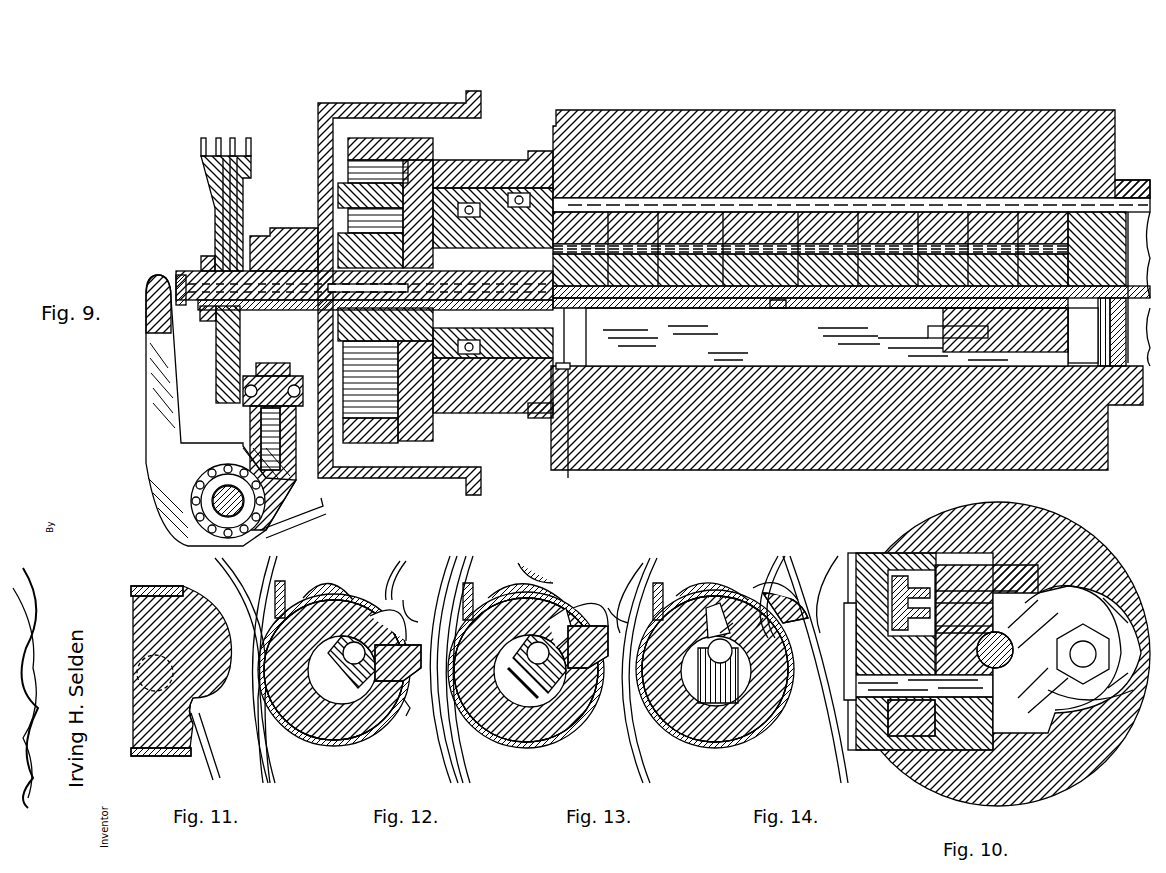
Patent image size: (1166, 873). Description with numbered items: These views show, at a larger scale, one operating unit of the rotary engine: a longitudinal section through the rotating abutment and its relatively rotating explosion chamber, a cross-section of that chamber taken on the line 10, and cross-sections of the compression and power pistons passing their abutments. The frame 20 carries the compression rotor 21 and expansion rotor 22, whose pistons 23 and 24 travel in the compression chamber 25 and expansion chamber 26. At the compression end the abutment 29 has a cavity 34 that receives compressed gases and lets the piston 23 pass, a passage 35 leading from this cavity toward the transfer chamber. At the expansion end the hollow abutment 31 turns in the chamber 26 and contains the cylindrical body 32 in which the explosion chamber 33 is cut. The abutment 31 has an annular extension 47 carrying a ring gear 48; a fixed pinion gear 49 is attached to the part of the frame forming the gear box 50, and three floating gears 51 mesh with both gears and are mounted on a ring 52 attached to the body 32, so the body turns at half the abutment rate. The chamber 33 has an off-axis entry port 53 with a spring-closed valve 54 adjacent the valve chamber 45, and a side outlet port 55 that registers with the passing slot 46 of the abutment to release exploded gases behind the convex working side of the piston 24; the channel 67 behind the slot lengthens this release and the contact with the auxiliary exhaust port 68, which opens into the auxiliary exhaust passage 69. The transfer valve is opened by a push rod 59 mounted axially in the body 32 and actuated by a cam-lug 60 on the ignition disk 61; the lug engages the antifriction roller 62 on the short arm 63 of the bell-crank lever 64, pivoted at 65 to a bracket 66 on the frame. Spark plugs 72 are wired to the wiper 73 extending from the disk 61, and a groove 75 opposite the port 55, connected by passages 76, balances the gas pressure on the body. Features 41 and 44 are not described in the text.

In FIG. 9, the section line 10 is at (878, 87).
In FIG. 10, the section line 10 is at (910, 495).
In FIG. 11, the frame 20 is at (165, 579).
In FIG. 12, the frame 20 is at (322, 733).
In FIG. 13, the frame 20 is at (545, 735).
In FIG. 14, the frame 20 is at (765, 770).
In FIG. 11, the compression rotor 21 is at (250, 574).
In FIG. 12, the expansion rotor 22 is at (448, 669).
In FIG. 13, the expansion rotor 22 is at (551, 669).
In FIG. 14, the expansion rotor 22 is at (830, 766).
In FIG. 11, the compression piston 23 is at (206, 700).
In FIG. 12, the power piston 24 is at (395, 635).
In FIG. 13, the power piston 24 is at (580, 620).
In FIG. 14, the power piston 24 is at (775, 580).
In FIG. 11, the compression chamber 25 is at (243, 685).
In FIG. 12, the expansion chamber 26 is at (413, 598).
In FIG. 13, the expansion chamber 26 is at (613, 674).
In FIG. 14, the expansion chamber 26 is at (779, 657).
In FIG. 11, the compression abutment 29 is at (143, 748).
In FIG. 9, the expansion abutment 31 is at (1100, 128).
In FIG. 12, the expansion abutment 31 is at (350, 595).
In FIG. 13, the expansion abutment 31 is at (478, 715).
In FIG. 14, the expansion abutment 31 is at (665, 715).
In FIG. 9, the explosion chamber body 32 is at (560, 360).
In FIG. 10, the explosion chamber body 32 is at (955, 515).
In FIG. 12, the explosion chamber body 32 is at (300, 735).
In FIG. 13, the explosion chamber body 32 is at (500, 735).
In FIG. 14, the explosion chamber body 32 is at (683, 735).
In FIG. 9, the explosion chamber 33 is at (827, 337).
In FIG. 10, the explosion chamber 33 is at (1026, 725).
In FIG. 12, the explosion chamber 33 is at (345, 697).
In FIG. 13, the explosion chamber 33 is at (528, 700).
In FIG. 14, the explosion chamber 33 is at (705, 700).
In FIG. 11, the cavity 34 is at (183, 745).
In FIG. 11, the passage 35 is at (130, 750).
In FIG. 11, the guide strip 41 is at (248, 740).
In FIG. 12, the guide strip 44 is at (408, 579).
In FIG. 13, the guide strip 44 is at (624, 597).
In FIG. 14, the guide strip 44 is at (823, 589).
In FIG. 9, the valve chamber 45 is at (1127, 190).
In FIG. 13, the passing slot 46 is at (548, 598).
In FIG. 14, the passing slot 46 is at (712, 610).
In FIG. 9, the annular extension 47 is at (483, 160).
In FIG. 9, the ring gear 48 is at (423, 140).
In FIG. 9, the fixed pinion gear 49 is at (340, 230).
In FIG. 9, the gear box 50 is at (310, 172).
In FIG. 9, the floating gears 51 is at (340, 163).
In FIG. 9, the ring 52 is at (330, 190).
In FIG. 9, the entry port 53 is at (1097, 358).
In FIG. 9, the spring-closed valve 54 is at (1067, 366).
In FIG. 10, the spring-closed valve 54 is at (1098, 683).
In FIG. 12, the spring-closed valve 54 is at (365, 700).
In FIG. 9, the outlet port 55 is at (1032, 358).
In FIG. 10, the outlet port 55 is at (1125, 700).
In FIG. 14, the outlet port 55 is at (722, 625).
In FIG. 9, the push rod 59 is at (540, 415).
In FIG. 10, the push rod 59 is at (980, 660).
In FIG. 9, the cam-lug 60 is at (215, 188).
In FIG. 9, the ignition disk 61 is at (207, 212).
In FIG. 9, the antifriction roller 62 is at (232, 378).
In FIG. 9, the short arm 63 is at (245, 420).
In FIG. 9, the lever 64 is at (150, 432).
In FIG. 9, the pivot 65 is at (200, 493).
In FIG. 9, the bracket 66 is at (318, 505).
In FIG. 12, the channel 67 is at (398, 705).
In FIG. 14, the channel 67 is at (755, 609).
In FIG. 12, the auxiliary exhaust port 68 is at (292, 592).
In FIG. 13, the auxiliary exhaust port 68 is at (513, 601).
In FIG. 14, the auxiliary exhaust port 68 is at (660, 600).
In FIG. 13, the auxiliary exhaust passage 69 is at (515, 574).
In FIG. 9, the spark plug 72 is at (770, 300).
In FIG. 10, the spark plug 72 is at (1010, 575).
In FIG. 9, the wiper 73 is at (245, 140).
In FIG. 9, the groove 75 is at (813, 190).
In FIG. 10, the groove 75 is at (848, 632).
In FIG. 13, the groove 75 is at (515, 700).
In FIG. 9, the passages 76 is at (672, 292).
In FIG. 10, the passages 76 is at (850, 678).